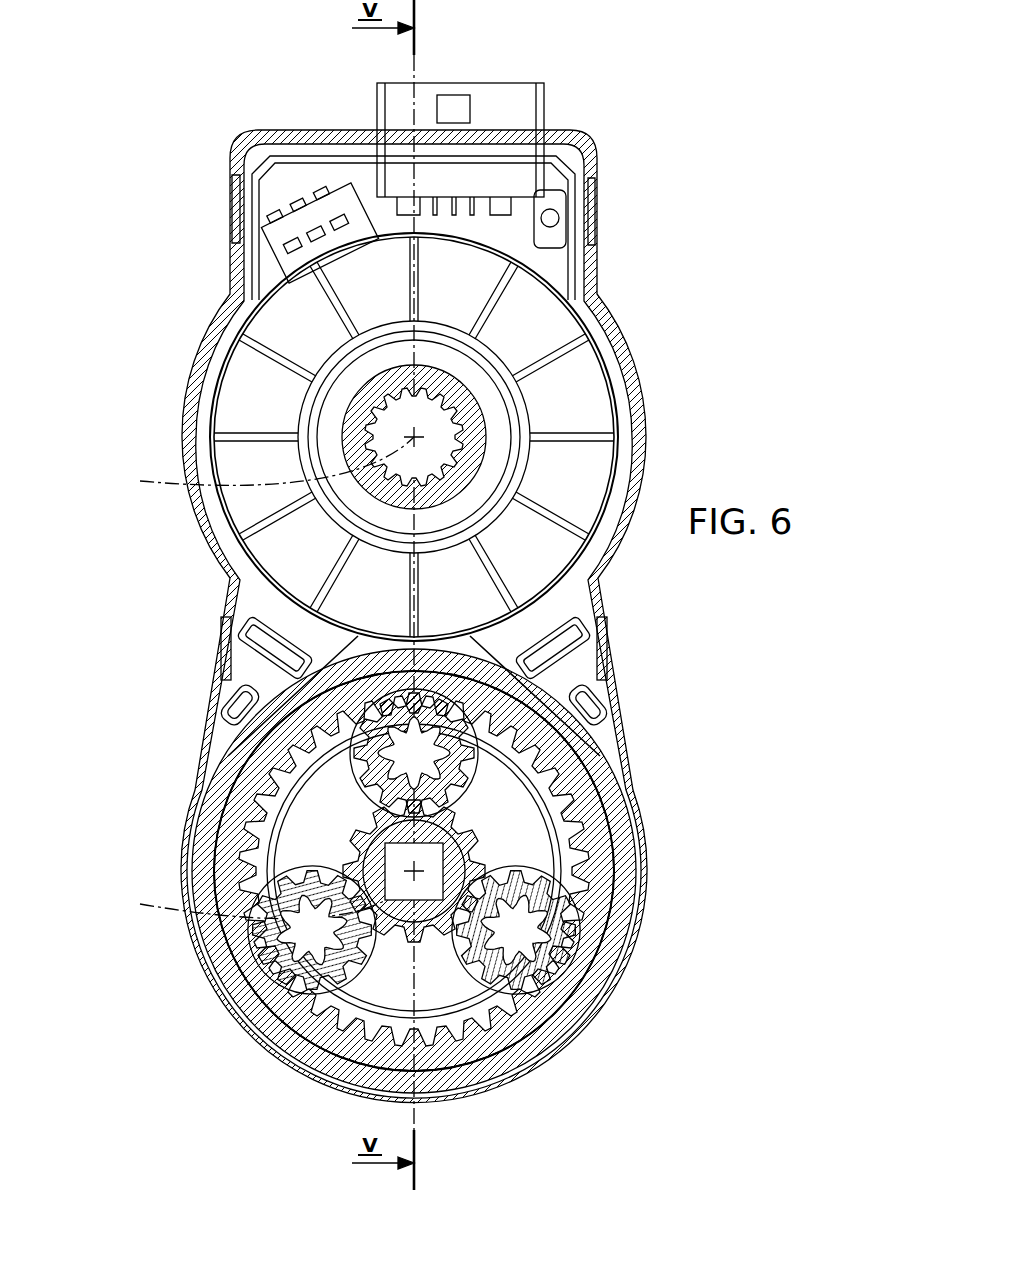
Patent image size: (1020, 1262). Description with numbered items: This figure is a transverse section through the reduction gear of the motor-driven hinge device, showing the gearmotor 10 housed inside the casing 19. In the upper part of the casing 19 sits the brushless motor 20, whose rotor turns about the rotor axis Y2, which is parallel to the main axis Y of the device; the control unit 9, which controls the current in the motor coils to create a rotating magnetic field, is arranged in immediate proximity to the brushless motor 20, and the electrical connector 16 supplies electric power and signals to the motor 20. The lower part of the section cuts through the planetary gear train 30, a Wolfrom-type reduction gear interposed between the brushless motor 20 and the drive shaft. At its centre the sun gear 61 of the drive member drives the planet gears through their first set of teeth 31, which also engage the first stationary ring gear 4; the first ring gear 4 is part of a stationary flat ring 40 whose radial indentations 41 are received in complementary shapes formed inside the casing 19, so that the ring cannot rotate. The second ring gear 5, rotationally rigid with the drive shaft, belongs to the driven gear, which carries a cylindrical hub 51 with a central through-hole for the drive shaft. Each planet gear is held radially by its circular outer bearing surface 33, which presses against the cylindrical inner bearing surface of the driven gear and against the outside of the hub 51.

The gearmotor 10 is at (722, 162).
The casing 19 is at (238, 145).
The electrical connector 16 is at (545, 108).
The control unit 9 is at (584, 265).
The brushless motor 20 is at (668, 330).
The rotor axis Y2 is at (256, 461).
The planetary gear train 30 is at (675, 752).
The stationary flat ring 40 is at (594, 822).
The radial indentations 41 is at (622, 882).
The circular outer bearing surface 33 is at (455, 1030).
The first set of teeth 31 is at (510, 1002).
The sun gear 61 is at (433, 953).
The cylindrical hub 51 is at (390, 862).
The second ring gear 5 is at (202, 830).
The first stationary ring gear 4 is at (222, 862).
The main axis Y is at (264, 895).